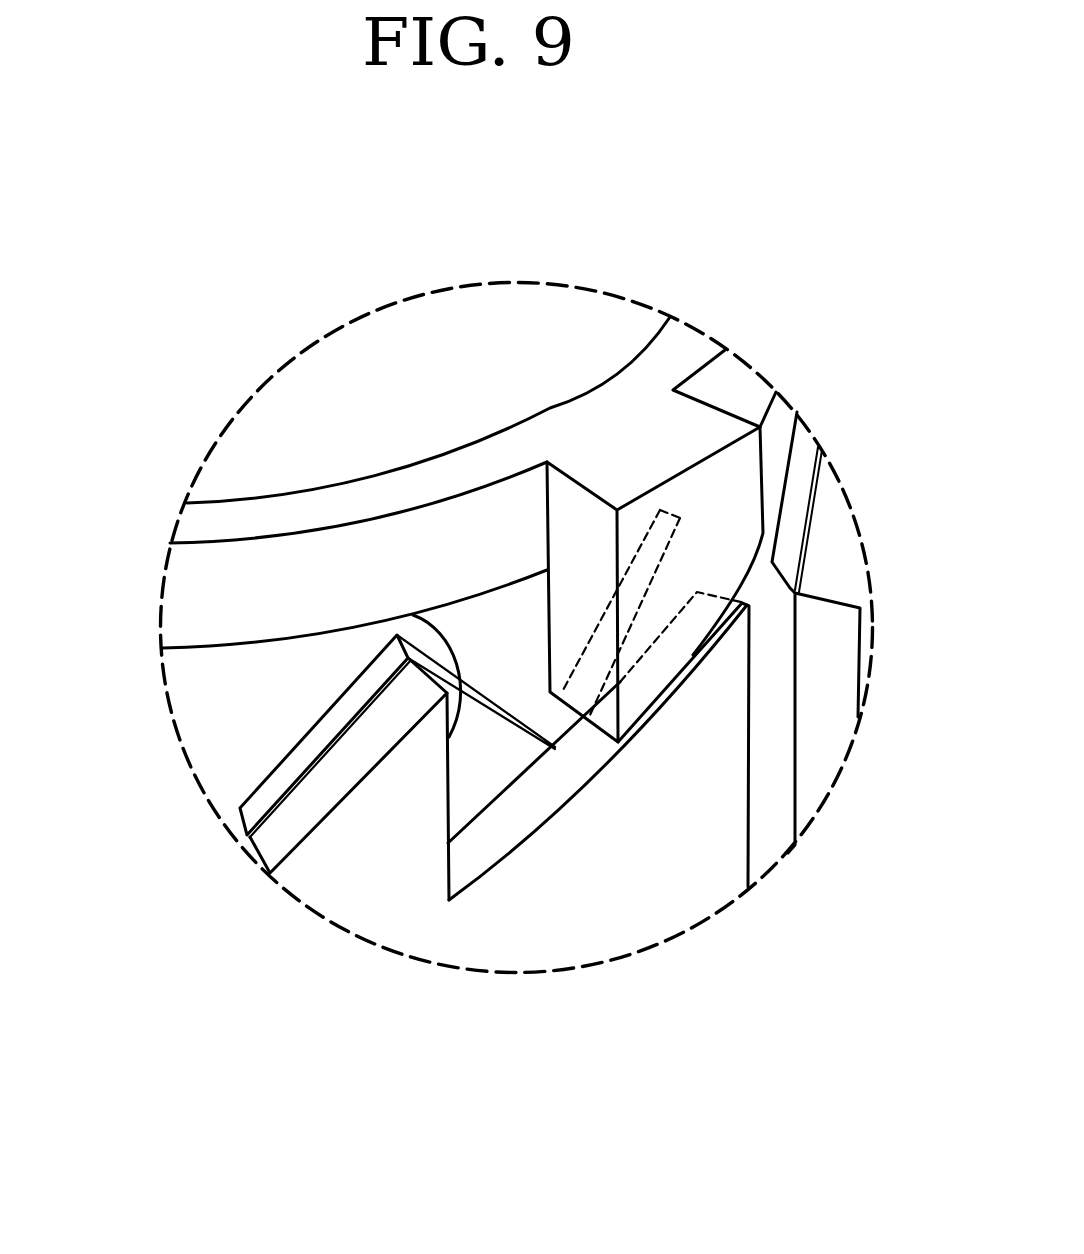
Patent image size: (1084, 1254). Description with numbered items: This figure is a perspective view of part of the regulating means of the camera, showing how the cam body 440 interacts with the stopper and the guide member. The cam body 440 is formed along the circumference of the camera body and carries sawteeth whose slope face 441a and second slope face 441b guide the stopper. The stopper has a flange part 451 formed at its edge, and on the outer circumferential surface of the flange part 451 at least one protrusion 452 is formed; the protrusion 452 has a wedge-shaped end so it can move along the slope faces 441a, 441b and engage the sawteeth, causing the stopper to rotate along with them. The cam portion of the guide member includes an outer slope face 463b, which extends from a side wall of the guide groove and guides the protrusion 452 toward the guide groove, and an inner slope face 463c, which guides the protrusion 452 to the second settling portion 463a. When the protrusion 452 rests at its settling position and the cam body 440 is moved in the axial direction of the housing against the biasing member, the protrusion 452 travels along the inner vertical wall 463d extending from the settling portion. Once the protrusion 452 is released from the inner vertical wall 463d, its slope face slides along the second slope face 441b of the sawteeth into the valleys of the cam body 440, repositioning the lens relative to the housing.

The cam body 440 is at (416, 669).
The slope face 441a is at (566, 712).
The second slope face 441b is at (350, 707).
The flange part 451 is at (513, 503).
The protrusion 452 is at (738, 498).
The second settling portion 463a is at (460, 885).
The outer slope face 463b is at (303, 823).
The inner slope face 463c is at (553, 788).
The inner vertical wall 463d is at (413, 615).